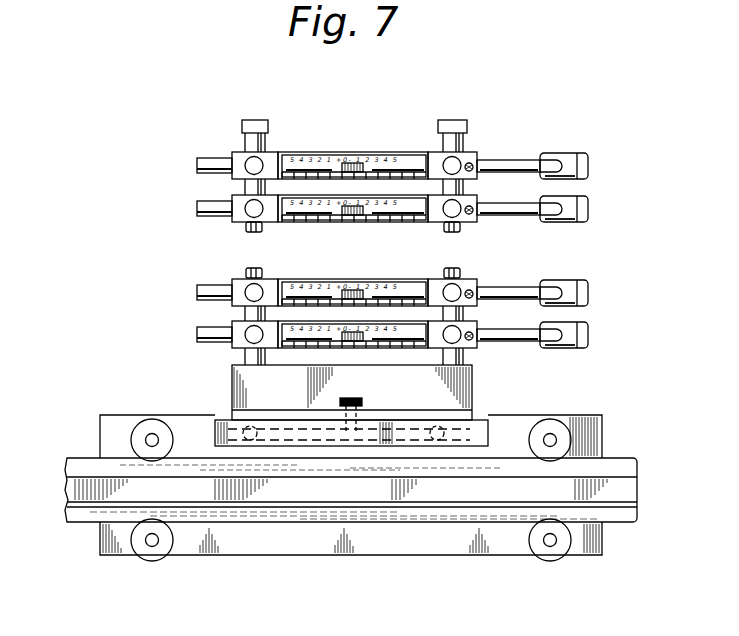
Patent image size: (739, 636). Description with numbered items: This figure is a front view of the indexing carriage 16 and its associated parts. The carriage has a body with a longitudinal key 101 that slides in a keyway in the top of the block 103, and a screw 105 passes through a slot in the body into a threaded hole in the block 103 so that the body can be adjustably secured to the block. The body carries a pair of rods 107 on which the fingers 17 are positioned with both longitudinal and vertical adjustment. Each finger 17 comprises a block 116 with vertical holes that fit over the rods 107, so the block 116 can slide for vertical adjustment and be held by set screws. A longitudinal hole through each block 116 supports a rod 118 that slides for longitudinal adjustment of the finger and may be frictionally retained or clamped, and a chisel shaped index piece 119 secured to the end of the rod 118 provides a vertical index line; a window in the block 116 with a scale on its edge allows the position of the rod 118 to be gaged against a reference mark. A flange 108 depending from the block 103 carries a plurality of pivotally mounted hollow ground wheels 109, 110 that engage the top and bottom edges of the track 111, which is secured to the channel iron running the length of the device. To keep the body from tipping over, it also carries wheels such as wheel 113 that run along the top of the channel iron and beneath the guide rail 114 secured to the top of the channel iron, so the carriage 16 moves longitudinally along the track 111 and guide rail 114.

The indexing carriage 16 is at (560, 412).
The finger 17 is at (568, 149).
The longitudinal key 101 is at (470, 420).
The block 103 is at (230, 420).
The screw 105 is at (351, 398).
The rod 107 is at (262, 233).
The flange 108 is at (226, 543).
The wheel 109 is at (548, 558).
The wheel 110 is at (558, 439).
The track 111 is at (84, 463).
The wheel 113 is at (253, 426).
The guide rail 114 is at (215, 438).
The block 116 is at (470, 153).
The rod 118 is at (487, 171).
The chisel shaped index piece 119 is at (588, 175).